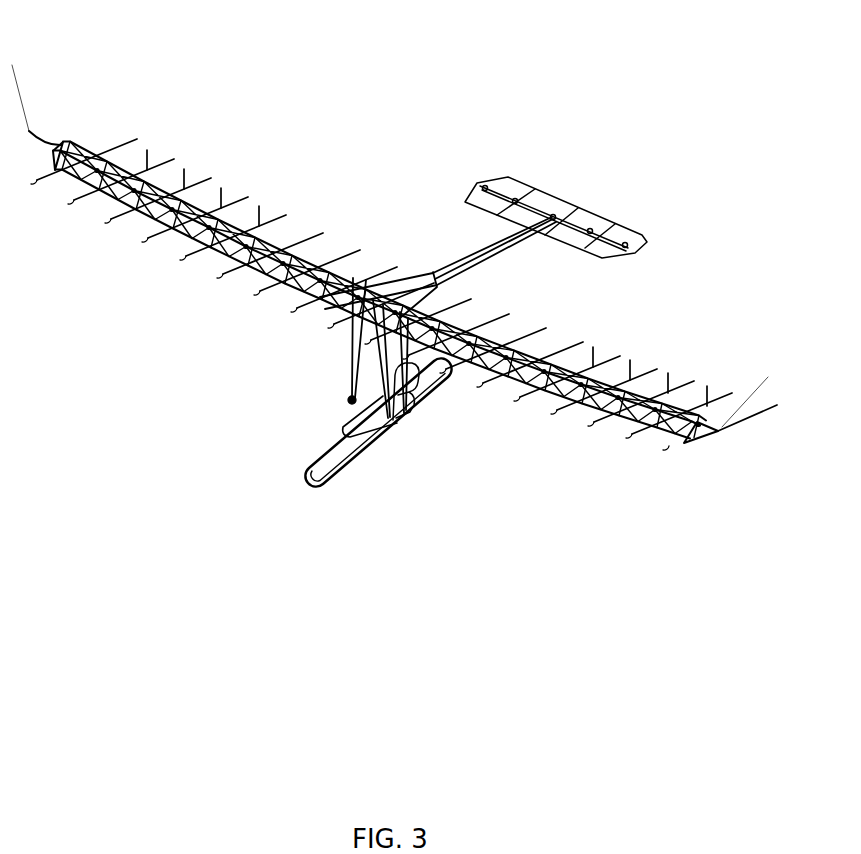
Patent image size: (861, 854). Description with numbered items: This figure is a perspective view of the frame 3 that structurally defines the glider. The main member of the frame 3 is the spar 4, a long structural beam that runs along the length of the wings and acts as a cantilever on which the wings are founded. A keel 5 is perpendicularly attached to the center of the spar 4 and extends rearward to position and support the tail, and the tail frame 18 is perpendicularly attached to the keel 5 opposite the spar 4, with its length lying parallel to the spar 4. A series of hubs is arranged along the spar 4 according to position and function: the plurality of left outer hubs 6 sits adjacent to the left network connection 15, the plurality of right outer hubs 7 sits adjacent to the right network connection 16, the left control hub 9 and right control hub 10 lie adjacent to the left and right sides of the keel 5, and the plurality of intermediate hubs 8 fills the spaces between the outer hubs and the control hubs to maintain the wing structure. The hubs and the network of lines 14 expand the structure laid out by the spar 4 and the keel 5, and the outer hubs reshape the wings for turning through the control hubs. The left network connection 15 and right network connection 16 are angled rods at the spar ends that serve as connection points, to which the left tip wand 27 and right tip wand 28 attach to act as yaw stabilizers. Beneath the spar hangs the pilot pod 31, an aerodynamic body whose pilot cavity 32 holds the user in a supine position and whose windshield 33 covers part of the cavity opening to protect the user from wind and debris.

The frame 3 is at (299, 106).
The spar 4 is at (393, 284).
The keel 5 is at (487, 246).
The plurality of left outer hubs 6 is at (527, 345).
The plurality of right outer hubs 7 is at (152, 177).
The plurality of intermediate hubs 8 is at (310, 252).
The left control hub 9 is at (378, 349).
The right control hub 10 is at (339, 330).
The network of lines 14 is at (303, 234).
The left network connection 15 is at (710, 431).
The right network connection 16 is at (60, 146).
The tail frame 18 is at (575, 188).
The left tip wand 27 is at (764, 398).
The right tip wand 28 is at (22, 90).
The pilot pod 31 is at (390, 462).
The pilot cavity 32 is at (408, 392).
The windshield 33 is at (345, 432).